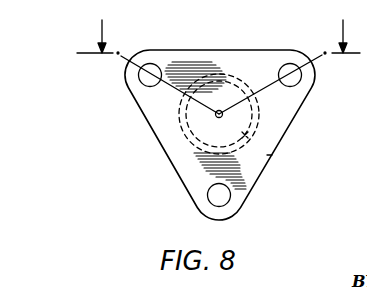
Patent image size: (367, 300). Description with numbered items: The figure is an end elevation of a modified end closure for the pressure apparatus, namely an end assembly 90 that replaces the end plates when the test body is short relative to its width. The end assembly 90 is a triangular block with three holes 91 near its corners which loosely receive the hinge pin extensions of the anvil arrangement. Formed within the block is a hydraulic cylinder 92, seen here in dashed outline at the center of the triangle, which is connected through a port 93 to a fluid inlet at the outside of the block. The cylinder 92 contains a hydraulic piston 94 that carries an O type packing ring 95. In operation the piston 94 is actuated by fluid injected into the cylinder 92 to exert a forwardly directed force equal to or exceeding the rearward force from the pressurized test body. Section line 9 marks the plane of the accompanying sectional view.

The section line 9- 9 is at (216, 67).
The end assembly 90 is at (275, 130).
The holes 91 is at (150, 71).
The hydraulic cylinder 92 is at (187, 138).
The port 93 is at (219, 127).
The hydraulic piston 94 is at (272, 155).
The O type packing ring 95 is at (180, 118).